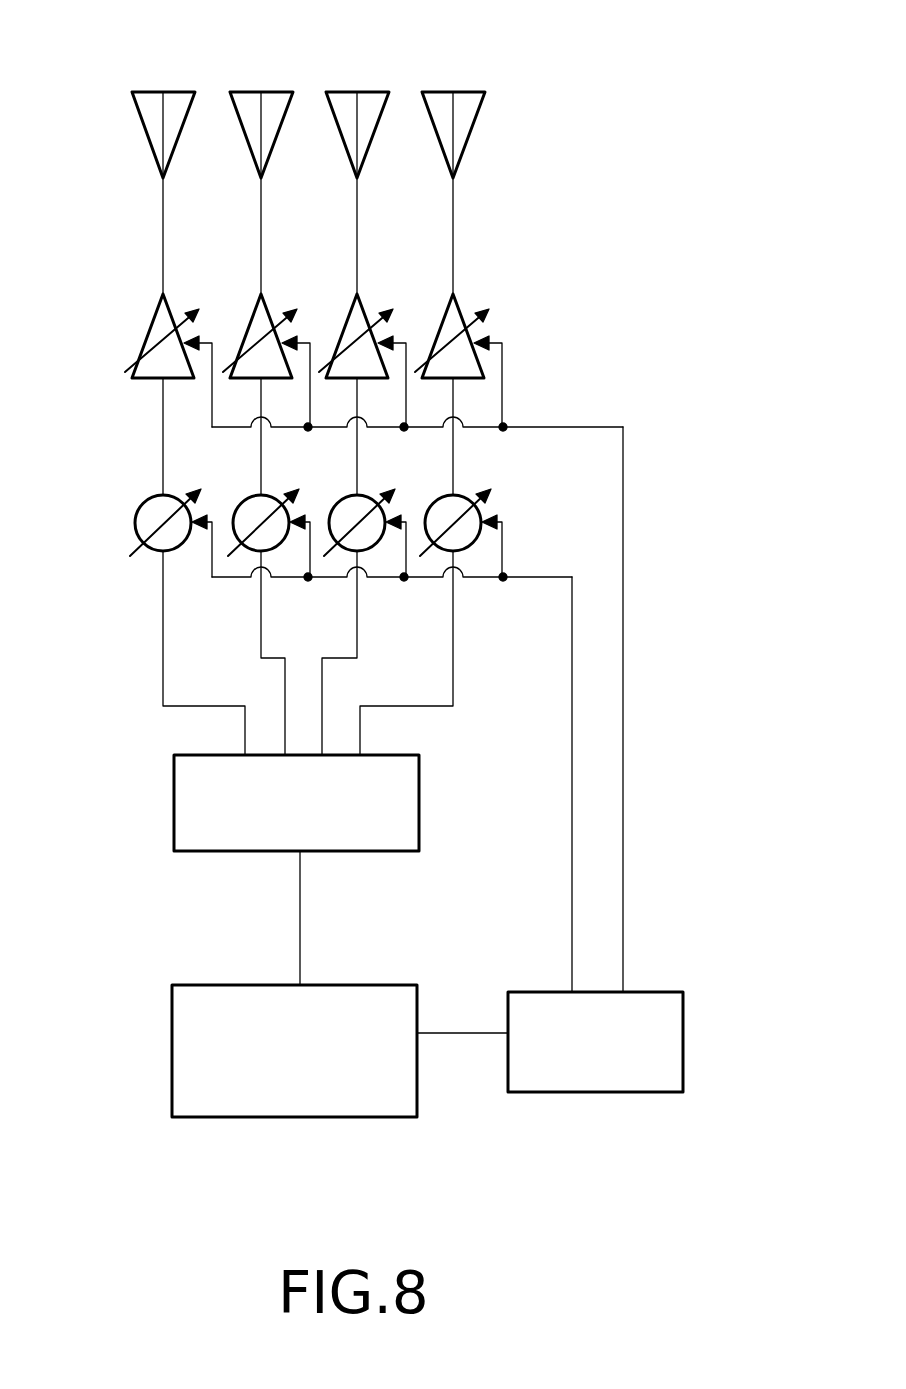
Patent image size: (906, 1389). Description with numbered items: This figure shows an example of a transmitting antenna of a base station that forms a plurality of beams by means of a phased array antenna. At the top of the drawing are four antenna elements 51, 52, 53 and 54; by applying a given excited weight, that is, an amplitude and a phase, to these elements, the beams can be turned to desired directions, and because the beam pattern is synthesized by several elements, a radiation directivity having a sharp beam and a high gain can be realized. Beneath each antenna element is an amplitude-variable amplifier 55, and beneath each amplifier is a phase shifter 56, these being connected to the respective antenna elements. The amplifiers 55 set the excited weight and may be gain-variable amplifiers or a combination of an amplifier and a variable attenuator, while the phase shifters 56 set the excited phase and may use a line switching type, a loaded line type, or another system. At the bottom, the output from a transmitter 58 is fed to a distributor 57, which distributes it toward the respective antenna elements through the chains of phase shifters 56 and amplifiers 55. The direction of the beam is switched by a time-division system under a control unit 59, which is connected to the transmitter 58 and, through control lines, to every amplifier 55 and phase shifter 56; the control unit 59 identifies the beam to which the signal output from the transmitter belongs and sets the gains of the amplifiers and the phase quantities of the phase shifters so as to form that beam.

The antenna element 51 is at (170, 91).
The antenna element 52 is at (268, 91).
The antenna element 53 is at (364, 91).
The antenna element 54 is at (460, 91).
The amplitude-variable amplifier 55 is at (147, 330).
The phase shifter 56 is at (137, 507).
The distributor 57 is at (174, 797).
The transmitter 58 is at (172, 1049).
The control unit 59 is at (683, 1050).